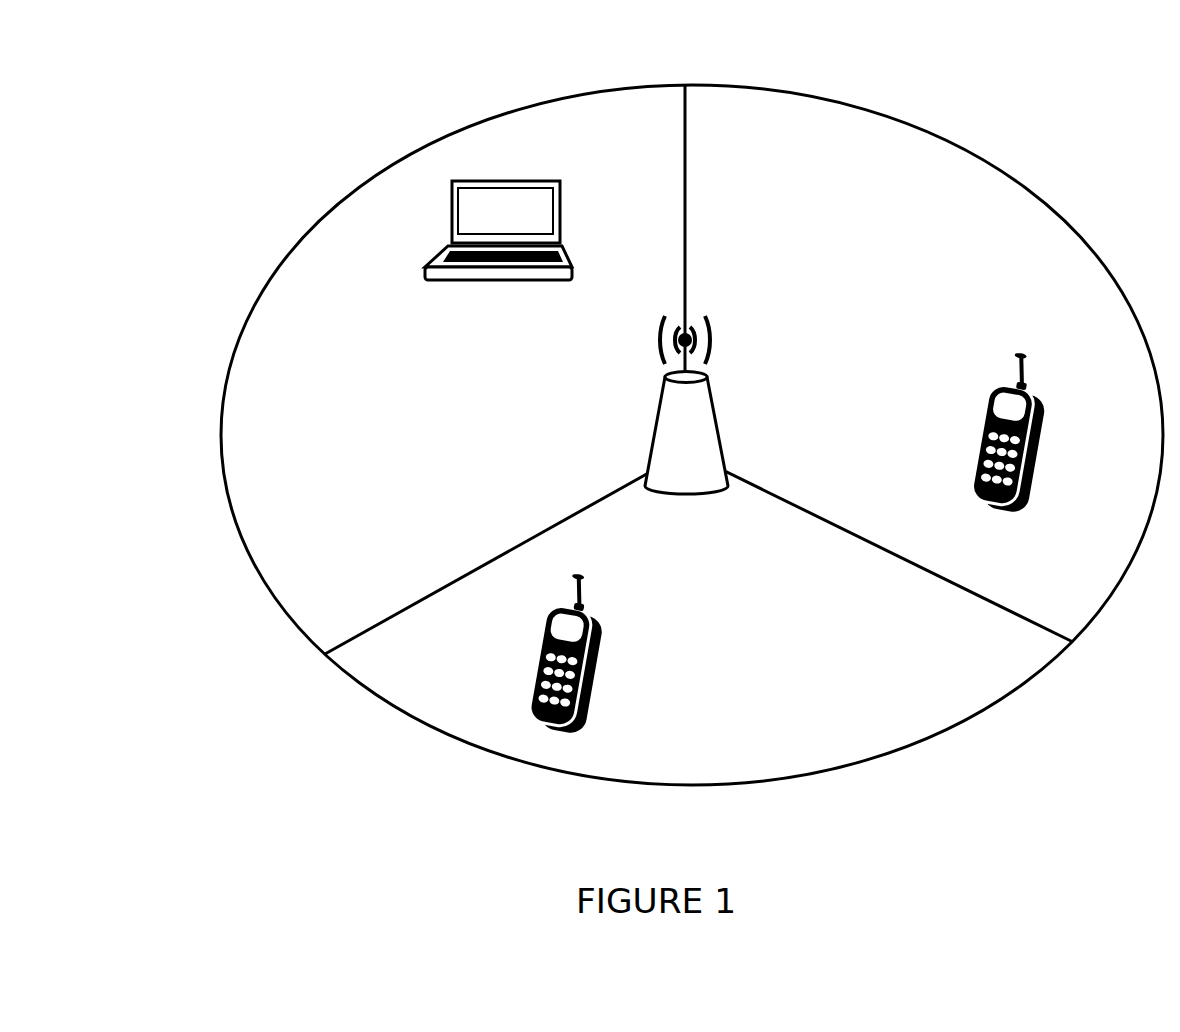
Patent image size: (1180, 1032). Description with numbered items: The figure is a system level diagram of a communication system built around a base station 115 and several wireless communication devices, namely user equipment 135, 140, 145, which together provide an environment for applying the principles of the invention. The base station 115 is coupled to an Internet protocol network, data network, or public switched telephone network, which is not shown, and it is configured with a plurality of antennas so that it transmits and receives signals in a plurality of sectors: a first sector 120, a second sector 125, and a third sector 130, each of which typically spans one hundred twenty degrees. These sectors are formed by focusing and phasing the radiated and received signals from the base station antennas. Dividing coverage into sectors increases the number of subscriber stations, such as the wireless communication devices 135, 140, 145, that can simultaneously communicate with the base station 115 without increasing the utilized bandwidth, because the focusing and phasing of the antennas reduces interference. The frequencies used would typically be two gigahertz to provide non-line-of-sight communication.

The base station 115 is at (686, 405).
The first sector 120 is at (924, 363).
The second sector 125 is at (698, 618).
The third sector 130 is at (453, 369).
The wireless communication device 135 is at (478, 247).
The wireless communication device 140 is at (972, 425).
The wireless communication device 145 is at (528, 640).